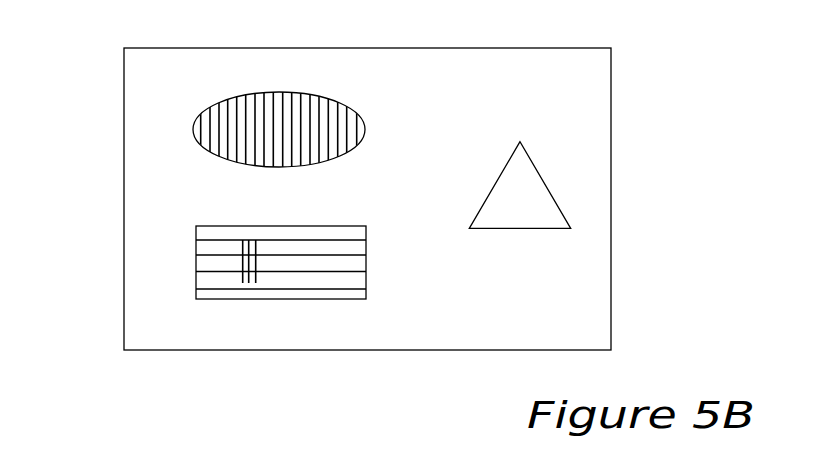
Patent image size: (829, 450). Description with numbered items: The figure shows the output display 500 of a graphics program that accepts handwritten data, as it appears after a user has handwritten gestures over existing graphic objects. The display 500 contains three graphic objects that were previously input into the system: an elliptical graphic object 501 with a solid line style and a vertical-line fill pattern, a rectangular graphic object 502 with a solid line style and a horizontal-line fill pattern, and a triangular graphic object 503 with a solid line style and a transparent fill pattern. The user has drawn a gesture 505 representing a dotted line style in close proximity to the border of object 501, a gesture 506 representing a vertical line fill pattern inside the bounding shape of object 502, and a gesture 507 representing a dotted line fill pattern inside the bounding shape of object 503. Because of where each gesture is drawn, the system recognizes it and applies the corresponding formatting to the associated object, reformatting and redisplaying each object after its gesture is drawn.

The output display 500 is at (124, 147).
The graphic object 501 is at (247, 93).
The graphic object 502 is at (277, 299).
The graphic object 503 is at (550, 190).
The gesture 505 is at (235, 98).
The gesture 506 is at (243, 243).
The gesture 507 is at (518, 193).